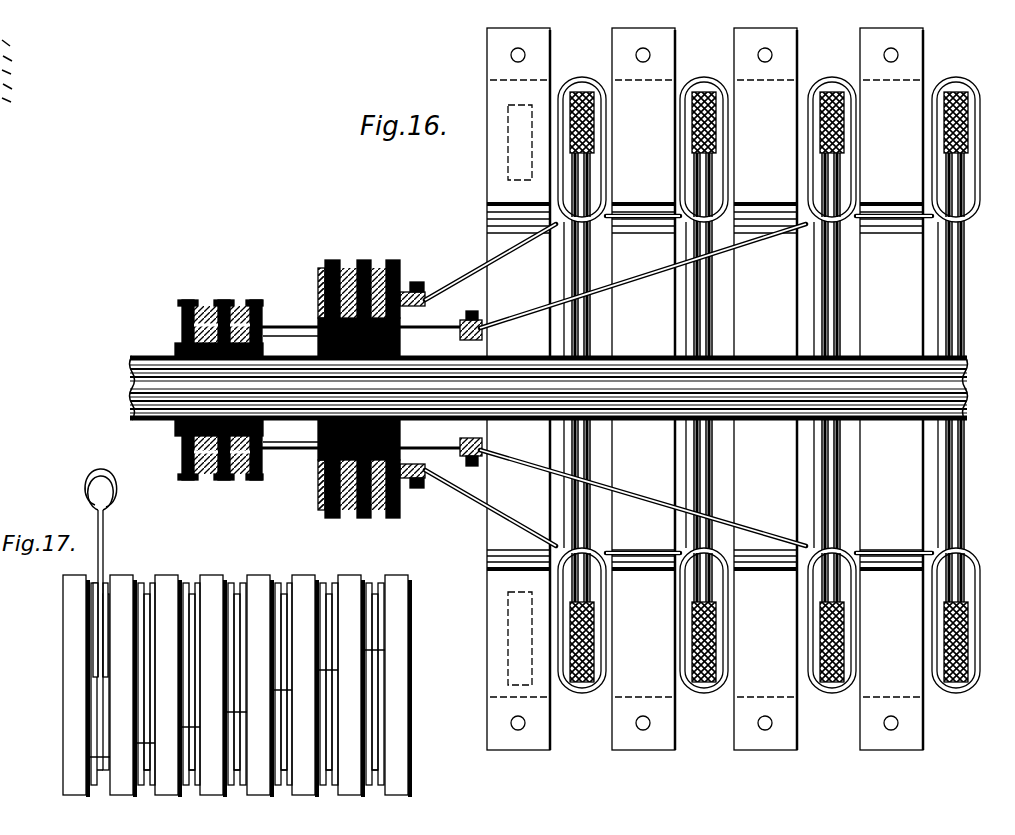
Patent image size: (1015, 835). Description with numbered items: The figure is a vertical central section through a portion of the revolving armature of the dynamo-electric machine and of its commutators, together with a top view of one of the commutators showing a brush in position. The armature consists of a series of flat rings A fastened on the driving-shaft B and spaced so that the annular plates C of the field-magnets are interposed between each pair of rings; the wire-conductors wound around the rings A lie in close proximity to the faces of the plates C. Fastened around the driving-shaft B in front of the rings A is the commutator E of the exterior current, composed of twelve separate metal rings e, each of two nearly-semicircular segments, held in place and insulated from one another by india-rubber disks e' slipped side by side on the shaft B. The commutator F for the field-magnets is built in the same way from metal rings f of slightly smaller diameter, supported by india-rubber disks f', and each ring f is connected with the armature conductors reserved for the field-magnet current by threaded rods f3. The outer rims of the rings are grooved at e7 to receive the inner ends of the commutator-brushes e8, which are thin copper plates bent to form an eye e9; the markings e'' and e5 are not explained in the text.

In FIG. 16, the armature-ring A is at (576, 78).
In FIG. 16, the driving-shaft B is at (134, 380).
In FIG. 16, the annular plate of the field-magnet C is at (705, 389).
In FIG. 16, the commutator of the exterior current E is at (359, 369).
In FIG. 17, the commutator of the exterior current E is at (222, 549).
In FIG. 16, the commutator for the field-magnets F is at (219, 403).
In FIG. 16, the metal ring of commutator E e is at (362, 391).
In FIG. 17, the metal ring of commutator E e is at (287, 565).
In FIG. 16, the india-rubber disk e' is at (358, 419).
In FIG. 17, the india-rubber disk e' is at (236, 663).
In FIG. 16, the insulating strip e'' is at (362, 388).
In FIG. 17, the contact strip e5 is at (112, 658).
In FIG. 16, the groove e7 is at (414, 289).
In FIG. 17, the groove e7 is at (150, 585).
In FIG. 17, the commutator-brush e8 is at (104, 556).
In FIG. 17, the eye e9 is at (94, 480).
In FIG. 16, the metal ring of commutator F f is at (220, 388).
In FIG. 16, the india-rubber disk f' is at (232, 391).
In FIG. 16, the rod f3 is at (268, 328).